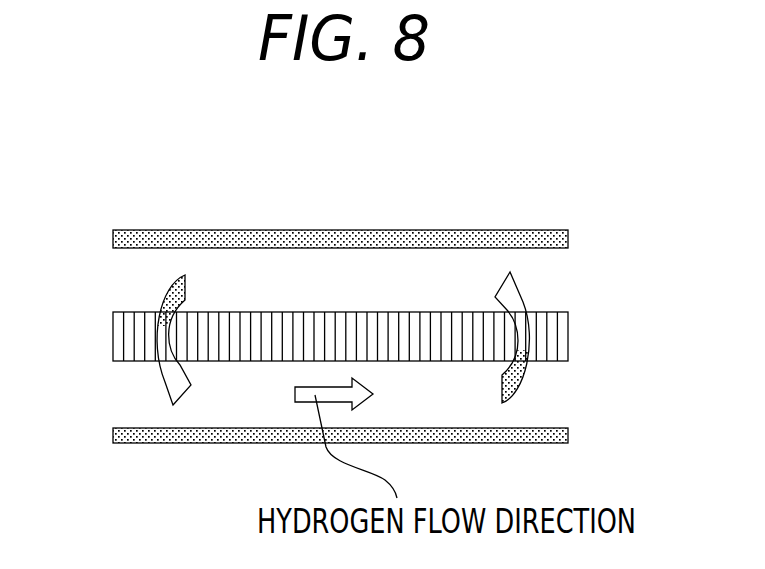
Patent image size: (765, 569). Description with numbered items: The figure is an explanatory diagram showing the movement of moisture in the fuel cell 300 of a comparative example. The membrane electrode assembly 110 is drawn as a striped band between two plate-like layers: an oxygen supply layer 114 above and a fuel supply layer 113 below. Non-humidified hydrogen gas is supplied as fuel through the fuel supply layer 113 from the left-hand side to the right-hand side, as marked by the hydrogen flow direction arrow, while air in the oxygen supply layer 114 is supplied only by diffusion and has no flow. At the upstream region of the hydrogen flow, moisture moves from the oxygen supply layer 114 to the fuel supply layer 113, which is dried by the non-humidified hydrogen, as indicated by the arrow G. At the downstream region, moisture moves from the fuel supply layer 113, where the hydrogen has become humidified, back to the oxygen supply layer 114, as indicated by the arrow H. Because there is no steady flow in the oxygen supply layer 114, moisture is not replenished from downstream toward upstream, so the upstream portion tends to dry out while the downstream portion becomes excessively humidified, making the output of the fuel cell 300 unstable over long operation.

The fuel cell 300 is at (390, 196).
The oxygen supply layer 114 is at (562, 281).
The membrane electrode assembly 110 is at (572, 328).
The fuel supply layer 113 is at (573, 395).
The arrow G is at (188, 285).
The arrow H is at (499, 386).